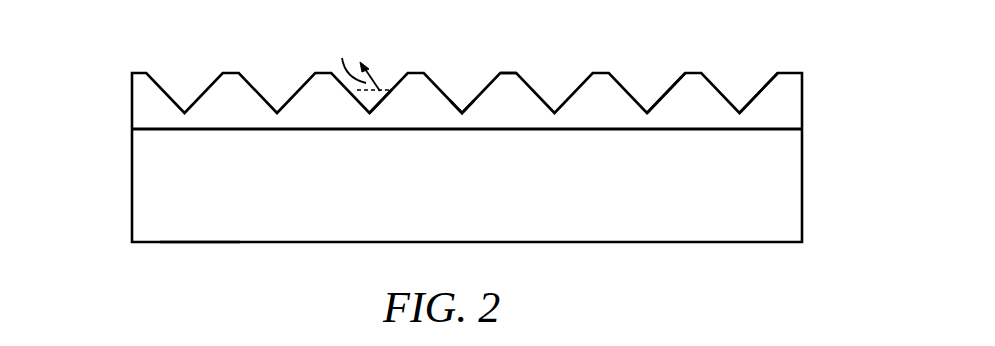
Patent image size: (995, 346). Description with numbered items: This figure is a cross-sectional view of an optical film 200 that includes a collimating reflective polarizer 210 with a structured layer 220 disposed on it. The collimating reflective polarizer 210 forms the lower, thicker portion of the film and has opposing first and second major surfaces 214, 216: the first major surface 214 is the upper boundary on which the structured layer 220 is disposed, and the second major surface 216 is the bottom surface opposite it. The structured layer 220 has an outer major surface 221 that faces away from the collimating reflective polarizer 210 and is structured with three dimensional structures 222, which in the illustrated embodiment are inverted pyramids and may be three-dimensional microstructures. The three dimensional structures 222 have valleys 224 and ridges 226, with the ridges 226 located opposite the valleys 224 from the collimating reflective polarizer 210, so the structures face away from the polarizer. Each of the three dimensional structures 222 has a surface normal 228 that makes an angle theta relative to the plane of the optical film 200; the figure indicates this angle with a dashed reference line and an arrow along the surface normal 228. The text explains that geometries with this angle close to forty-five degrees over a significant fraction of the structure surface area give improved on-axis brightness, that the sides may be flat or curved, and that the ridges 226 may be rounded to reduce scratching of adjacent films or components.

The optical film 200 is at (95, 108).
The collimating reflective polarizer 210 is at (802, 175).
The first major surface 214 is at (172, 129).
The second major surface 216 is at (197, 242).
The structured layer 220 is at (802, 102).
The outer major surface 221 is at (765, 88).
The three dimensional structures 222 is at (668, 88).
The valleys 224 is at (462, 112).
The ridges 226 is at (510, 73).
The surface normal 228 is at (379, 88).